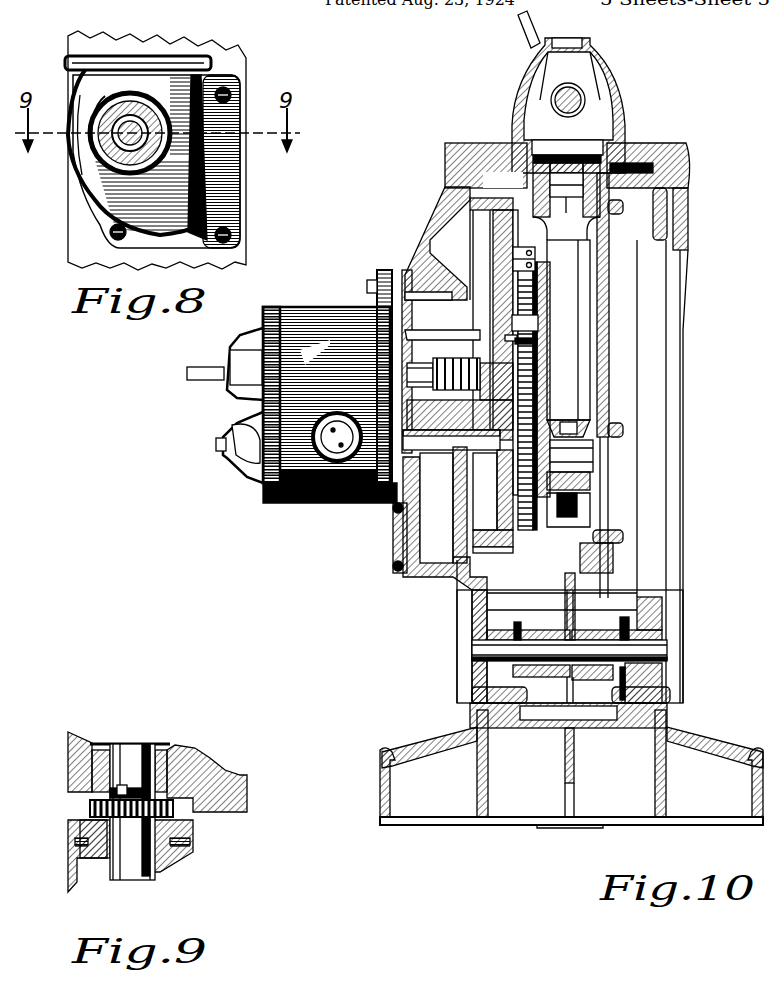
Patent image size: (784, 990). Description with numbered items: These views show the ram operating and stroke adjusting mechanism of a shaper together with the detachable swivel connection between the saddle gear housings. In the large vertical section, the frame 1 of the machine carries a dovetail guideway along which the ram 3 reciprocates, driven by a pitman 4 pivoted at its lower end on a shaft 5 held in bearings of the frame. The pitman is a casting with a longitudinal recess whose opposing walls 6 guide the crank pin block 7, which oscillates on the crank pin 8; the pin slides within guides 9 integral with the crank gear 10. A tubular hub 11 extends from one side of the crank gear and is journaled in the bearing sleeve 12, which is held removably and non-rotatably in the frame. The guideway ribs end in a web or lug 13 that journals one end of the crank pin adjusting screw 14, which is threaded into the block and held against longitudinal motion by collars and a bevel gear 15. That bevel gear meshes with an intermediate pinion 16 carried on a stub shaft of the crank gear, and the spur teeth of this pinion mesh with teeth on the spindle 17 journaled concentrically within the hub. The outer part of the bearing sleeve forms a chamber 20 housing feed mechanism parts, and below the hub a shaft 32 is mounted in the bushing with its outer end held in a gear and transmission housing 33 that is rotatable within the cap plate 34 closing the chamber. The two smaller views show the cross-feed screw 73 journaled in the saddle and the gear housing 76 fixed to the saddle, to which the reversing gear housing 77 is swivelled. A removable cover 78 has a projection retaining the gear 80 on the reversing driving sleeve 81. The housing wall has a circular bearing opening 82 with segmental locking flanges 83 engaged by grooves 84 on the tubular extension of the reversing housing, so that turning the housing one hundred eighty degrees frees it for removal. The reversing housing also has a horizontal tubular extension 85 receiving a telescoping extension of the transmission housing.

In FIG. 10, the frame 1 is at (690, 190).
In FIG. 10, the ram 3 is at (625, 93).
In FIG. 10, the pitman 4 is at (605, 392).
In FIG. 10, the shaft 5 is at (585, 668).
In FIG. 10, the opposing walls 6 is at (538, 341).
In FIG. 10, the crank pin block 7 is at (562, 420).
In FIG. 10, the crank pin 8 is at (595, 458).
In FIG. 10, the guides 9 is at (540, 382).
In FIG. 10, the crank gear 10 is at (505, 545).
In FIG. 10, the hub 11 is at (445, 362).
In FIG. 10, the bearing sleeve 12 is at (440, 430).
In FIG. 10, the web or lug 13 is at (542, 292).
In FIG. 10, the crank pin adjusting screw 14 is at (527, 530).
In FIG. 9, the bevel gear 15 is at (185, 758).
In FIG. 10, the bevel gear 15 is at (535, 325).
In FIG. 10, the intermediate pinion 16 is at (490, 300).
In FIG. 10, the spindle 17 is at (467, 390).
In FIG. 10, the chamber 20 is at (312, 307).
In FIG. 10, the shaft 32 is at (216, 448).
In FIG. 10, the gear and transmission housing 33 is at (240, 470).
In FIG. 10, the cap plate 34 is at (270, 503).
In FIG. 8, the cross-feed screw 73 is at (150, 76).
In FIG. 9, the cross-feed screw 73 is at (128, 745).
In FIG. 8, the gear housing 76 is at (106, 212).
In FIG. 9, the gear housing 76 is at (70, 797).
In FIG. 9, the reversing gear housing 77 is at (72, 888).
In FIG. 8, the removable cover 78 is at (108, 57).
In FIG. 9, the gear 80 is at (92, 808).
In FIG. 8, the reversing driving sleeve 81 is at (140, 170).
In FIG. 8, the circular bearing opening 82 is at (110, 176).
In FIG. 9, the circular bearing opening 82 is at (126, 786).
In FIG. 8, the locking flanges 83 is at (168, 100).
In FIG. 9, the locking flanges 83 is at (76, 843).
In FIG. 8, the grooves 84 is at (232, 122).
In FIG. 9, the grooves 84 is at (80, 852).
In FIG. 10, the tubular extension 85 is at (232, 428).